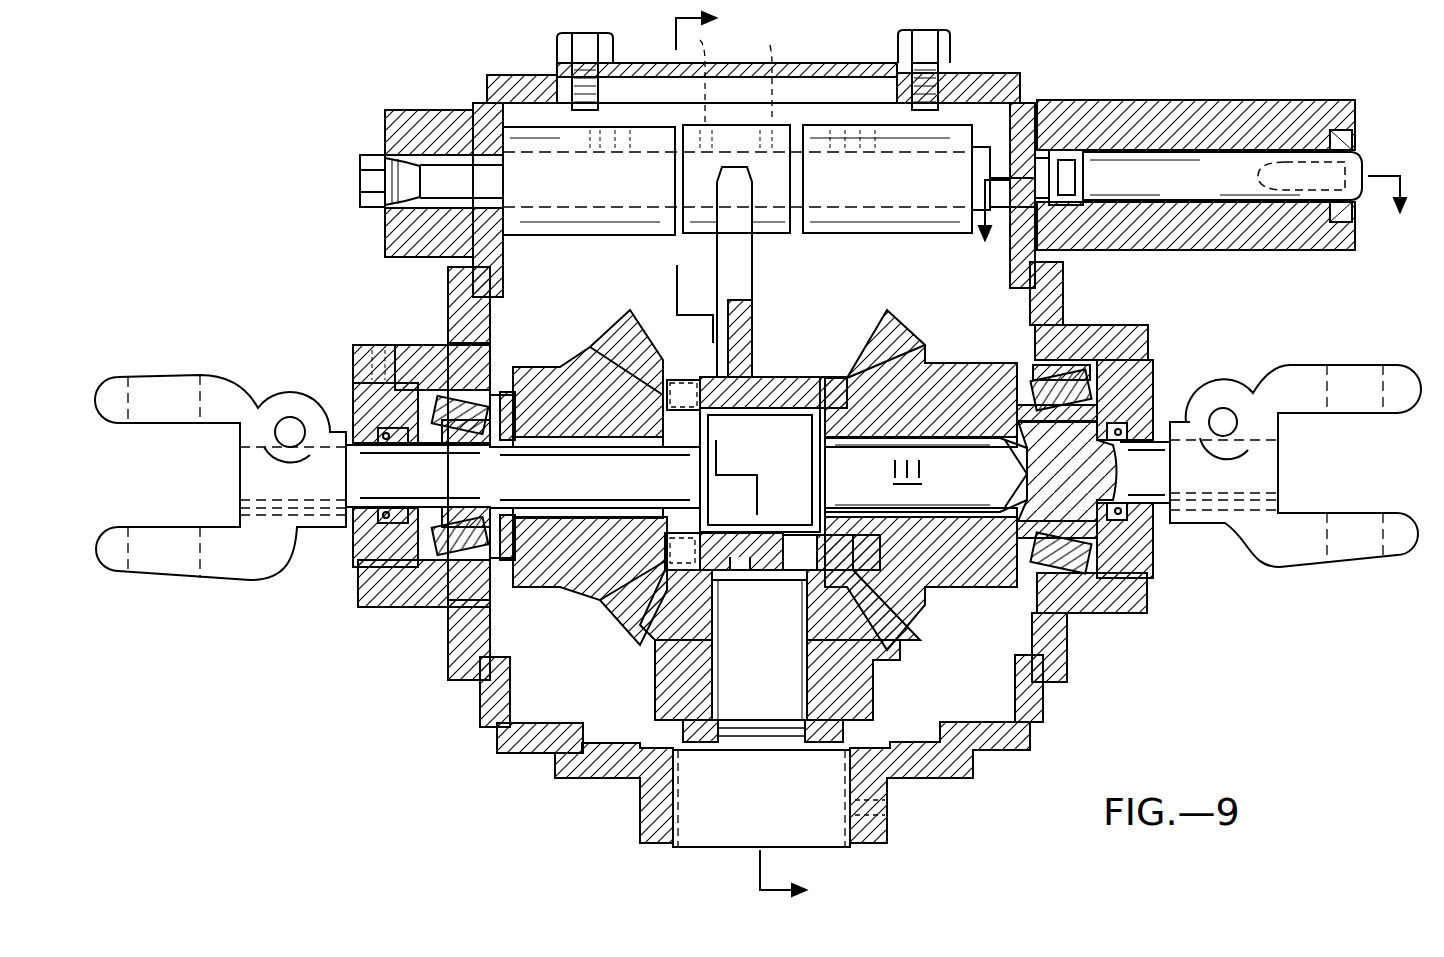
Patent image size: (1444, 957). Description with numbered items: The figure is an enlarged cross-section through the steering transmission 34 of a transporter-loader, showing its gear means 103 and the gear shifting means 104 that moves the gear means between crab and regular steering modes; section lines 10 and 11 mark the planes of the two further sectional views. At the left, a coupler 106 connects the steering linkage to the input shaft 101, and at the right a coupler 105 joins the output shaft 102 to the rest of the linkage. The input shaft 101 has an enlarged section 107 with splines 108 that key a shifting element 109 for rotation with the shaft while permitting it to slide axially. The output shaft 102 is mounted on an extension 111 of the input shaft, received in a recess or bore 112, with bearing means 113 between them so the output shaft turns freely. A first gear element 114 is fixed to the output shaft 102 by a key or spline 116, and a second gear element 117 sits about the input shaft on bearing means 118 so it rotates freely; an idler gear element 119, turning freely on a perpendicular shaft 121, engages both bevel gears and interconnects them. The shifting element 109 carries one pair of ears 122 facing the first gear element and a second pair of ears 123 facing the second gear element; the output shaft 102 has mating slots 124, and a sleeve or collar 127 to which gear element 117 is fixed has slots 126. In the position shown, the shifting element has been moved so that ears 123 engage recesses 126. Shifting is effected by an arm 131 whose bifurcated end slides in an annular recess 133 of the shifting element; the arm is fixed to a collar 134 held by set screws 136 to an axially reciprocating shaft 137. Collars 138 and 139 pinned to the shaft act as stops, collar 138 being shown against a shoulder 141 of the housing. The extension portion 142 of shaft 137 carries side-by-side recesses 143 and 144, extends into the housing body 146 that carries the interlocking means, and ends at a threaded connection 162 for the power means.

The section line 10- 10 is at (755, 455).
The section line 11- 11 is at (1196, 214).
The steering transmission 34 is at (302, 282).
The input shaft 101 is at (358, 405).
The output shaft 102 is at (1168, 420).
The gear means 103 is at (553, 670).
The gear shifting means 104 is at (852, 275).
The coupler 105 is at (1308, 365).
The coupler 106 is at (205, 375).
The enlarged section 107 is at (822, 472).
The splines 108 is at (800, 380).
The shifting element 109 is at (752, 375).
The extension 111 is at (907, 472).
The recess or bore 112 is at (960, 575).
The bearing means 113 is at (950, 437).
The first gear element 114 is at (945, 363).
The key or spline 116 is at (985, 380).
The second gear element 117 is at (530, 367).
The bearing means 118 is at (580, 367).
The idler gear element 119 is at (655, 685).
The shaft 121 is at (840, 675).
The protrusions or ears 122 is at (828, 385).
The ears or protrusions 123 is at (665, 380).
The mating recesses or slots 124 is at (850, 377).
The slots 126 is at (698, 385).
The sleeve or collar 127 is at (625, 437).
The arm 131 is at (752, 252).
The annular recess 133 is at (740, 408).
The collar 134 is at (740, 122).
The set screws 136 is at (755, 76).
The shaft 137 is at (445, 150).
The collar 138 is at (532, 128).
The collar 139 is at (955, 127).
The shoulder 141 is at (503, 262).
The extension portion 142 is at (1158, 150).
The recess 143 is at (1042, 158).
The recess 144 is at (1070, 160).
The body 146 is at (1225, 100).
The threaded connection 162 is at (1355, 162).